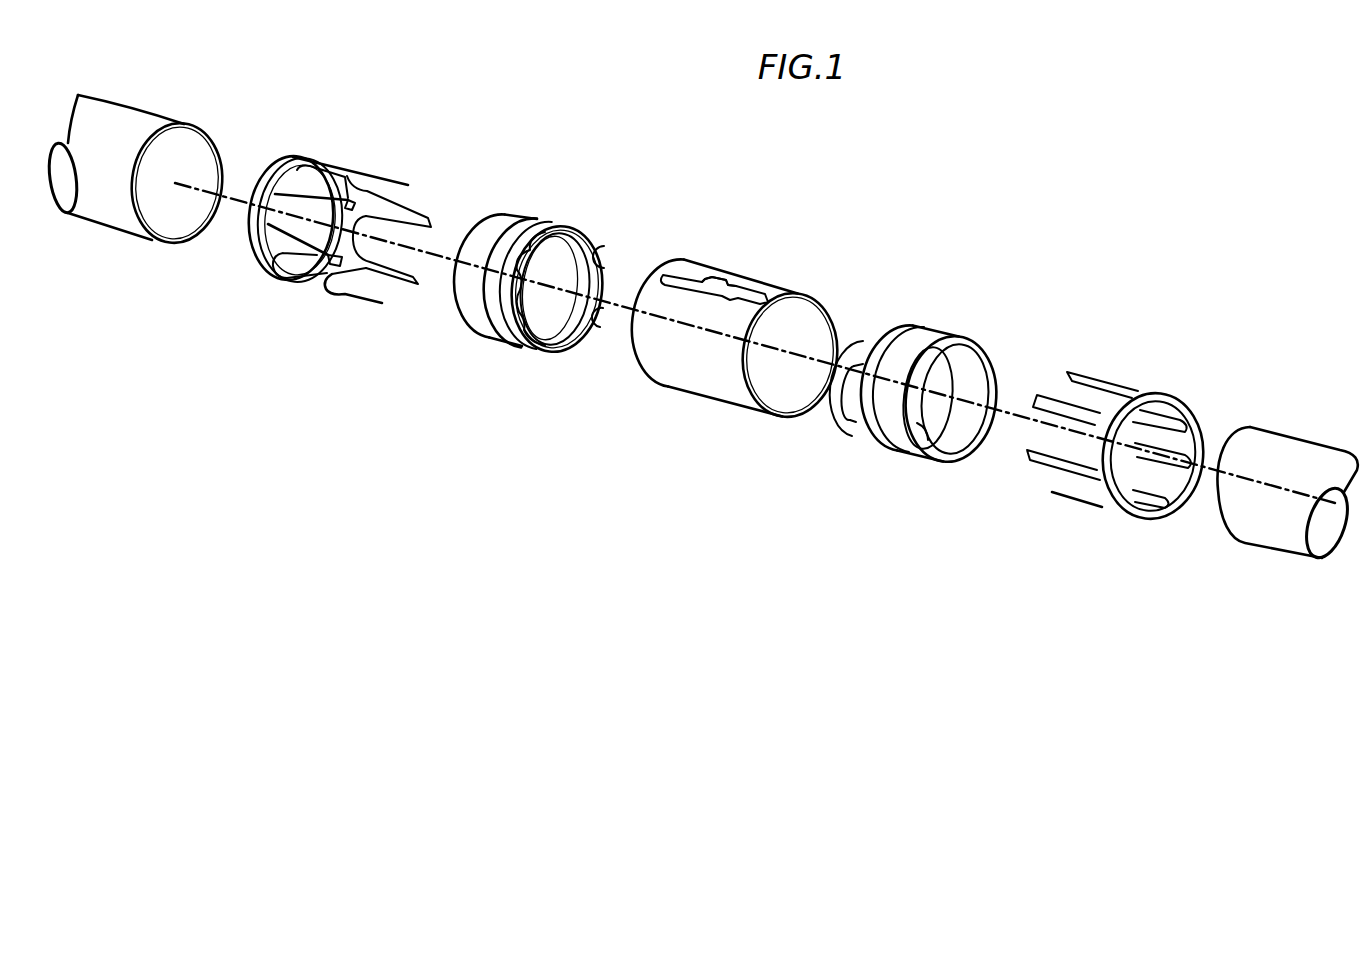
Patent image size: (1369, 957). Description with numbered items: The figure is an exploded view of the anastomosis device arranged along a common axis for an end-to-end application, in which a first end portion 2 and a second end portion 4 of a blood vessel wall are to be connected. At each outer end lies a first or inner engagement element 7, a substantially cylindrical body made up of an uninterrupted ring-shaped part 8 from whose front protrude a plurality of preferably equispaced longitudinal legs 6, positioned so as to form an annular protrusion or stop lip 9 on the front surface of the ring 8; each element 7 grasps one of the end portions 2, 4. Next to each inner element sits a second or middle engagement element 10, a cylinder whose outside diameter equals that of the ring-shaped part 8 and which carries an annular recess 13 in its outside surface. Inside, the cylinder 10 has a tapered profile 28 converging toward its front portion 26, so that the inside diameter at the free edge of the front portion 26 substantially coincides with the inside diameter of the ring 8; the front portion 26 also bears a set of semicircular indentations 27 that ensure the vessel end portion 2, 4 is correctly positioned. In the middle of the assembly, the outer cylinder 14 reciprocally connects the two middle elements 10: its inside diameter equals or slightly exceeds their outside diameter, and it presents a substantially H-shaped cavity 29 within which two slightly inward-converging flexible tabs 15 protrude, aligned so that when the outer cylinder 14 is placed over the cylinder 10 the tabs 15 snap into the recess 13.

The first end portion of a blood vessel wall 2 is at (110, 123).
The second end portion of a blood vessel wall 4 is at (1263, 527).
The longitudinal legs 6 is at (402, 178).
The first engagement element 7 is at (716, 316).
The uninterrupted ring-shaped part 8 is at (287, 165).
The annular protrusion or stop lip 9 is at (270, 270).
The second engagement element 10 is at (726, 322).
The annular recess 13 is at (522, 236).
The outer cylinder 14 is at (738, 333).
The flexible tabs 15 is at (710, 272).
The front portion 26 is at (773, 417).
The semicircular indentations 27 is at (574, 222).
The tapered profile 28 is at (603, 280).
The H-shaped cavity 29 is at (726, 282).